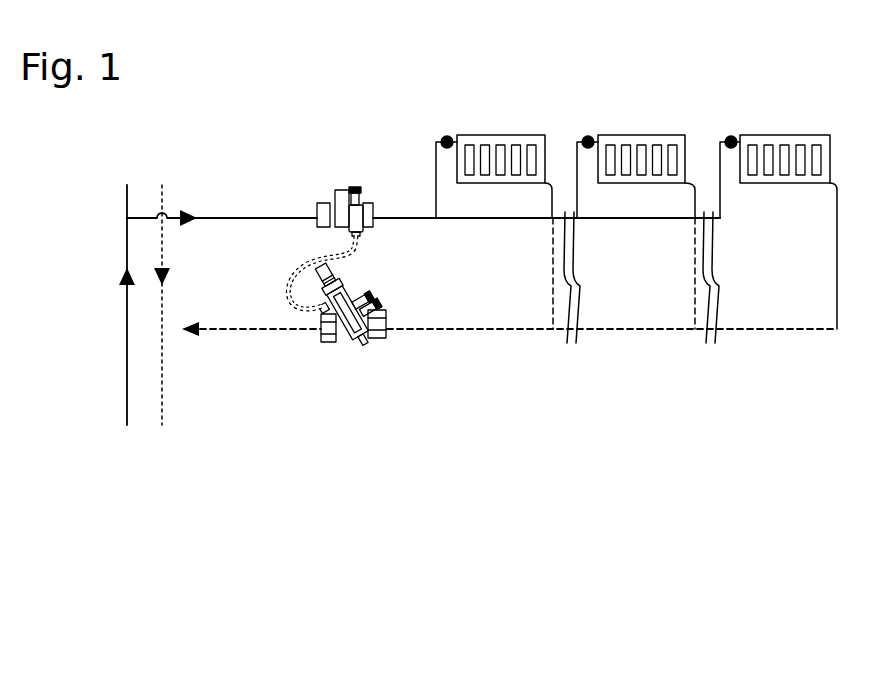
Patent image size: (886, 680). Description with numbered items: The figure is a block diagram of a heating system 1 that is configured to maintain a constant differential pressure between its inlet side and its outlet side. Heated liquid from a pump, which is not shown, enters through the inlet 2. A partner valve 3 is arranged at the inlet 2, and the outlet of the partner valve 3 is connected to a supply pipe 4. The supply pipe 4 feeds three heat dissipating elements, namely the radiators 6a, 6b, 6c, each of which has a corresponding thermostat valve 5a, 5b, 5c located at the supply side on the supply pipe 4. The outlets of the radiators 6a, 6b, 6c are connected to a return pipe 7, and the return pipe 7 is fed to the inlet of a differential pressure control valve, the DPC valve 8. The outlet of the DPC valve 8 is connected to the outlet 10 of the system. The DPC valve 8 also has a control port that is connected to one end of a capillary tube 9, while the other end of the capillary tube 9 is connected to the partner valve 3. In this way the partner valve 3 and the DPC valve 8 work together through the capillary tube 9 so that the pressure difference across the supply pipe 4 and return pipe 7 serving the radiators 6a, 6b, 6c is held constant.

The heating system 1 is at (650, 565).
The inlet 2 is at (228, 218).
The partner valve 3 is at (354, 187).
The supply pipe 4 is at (397, 218).
The thermostat valve 5a is at (447, 140).
The thermostat valve 5b is at (588, 140).
The thermostat valve 5c is at (731, 140).
The radiator 6a is at (498, 135).
The radiator 6b is at (650, 135).
The radiator 6c is at (812, 135).
The return pipe 7 is at (498, 330).
The differential pressure control valve 8 is at (357, 345).
The capillary tube 9 is at (287, 300).
The outlet 10 is at (222, 330).